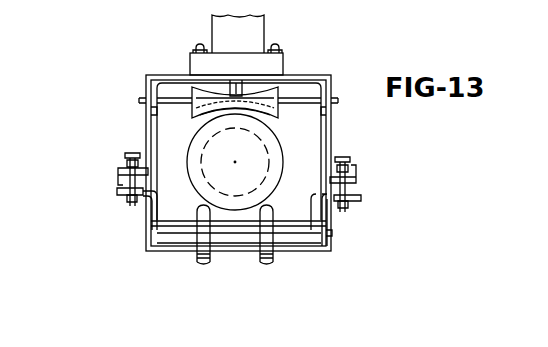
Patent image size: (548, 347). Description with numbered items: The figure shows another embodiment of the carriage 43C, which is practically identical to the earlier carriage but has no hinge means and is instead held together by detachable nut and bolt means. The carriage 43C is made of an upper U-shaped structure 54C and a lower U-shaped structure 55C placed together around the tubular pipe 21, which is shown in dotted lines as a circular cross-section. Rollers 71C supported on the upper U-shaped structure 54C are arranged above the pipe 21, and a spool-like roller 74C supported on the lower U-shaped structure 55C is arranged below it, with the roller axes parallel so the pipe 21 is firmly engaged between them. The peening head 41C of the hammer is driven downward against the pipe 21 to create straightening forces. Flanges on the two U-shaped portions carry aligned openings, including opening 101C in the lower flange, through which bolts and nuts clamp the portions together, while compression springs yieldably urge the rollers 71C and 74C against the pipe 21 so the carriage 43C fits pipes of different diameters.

The pipe 21 is at (274, 128).
The peening head 41C is at (237, 83).
The carriage 43C is at (359, 50).
The upper U-shaped structure 54C is at (333, 129).
The lower U-shaped structure 55C is at (331, 246).
The rotatable rollers 71C is at (200, 92).
The spool-like roller 74C is at (270, 266).
The opening 101C is at (306, 186).